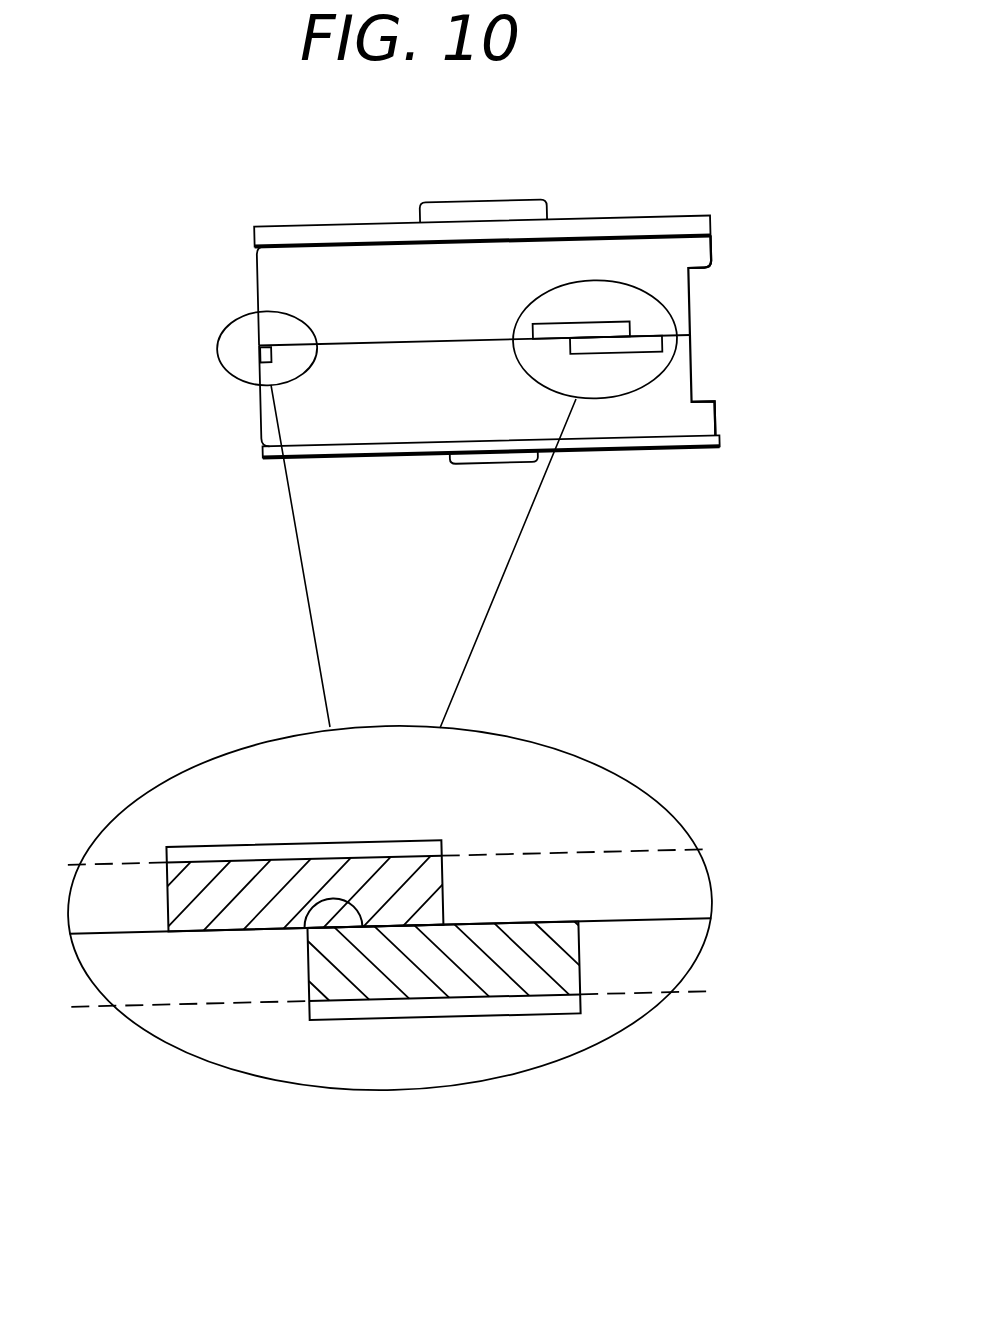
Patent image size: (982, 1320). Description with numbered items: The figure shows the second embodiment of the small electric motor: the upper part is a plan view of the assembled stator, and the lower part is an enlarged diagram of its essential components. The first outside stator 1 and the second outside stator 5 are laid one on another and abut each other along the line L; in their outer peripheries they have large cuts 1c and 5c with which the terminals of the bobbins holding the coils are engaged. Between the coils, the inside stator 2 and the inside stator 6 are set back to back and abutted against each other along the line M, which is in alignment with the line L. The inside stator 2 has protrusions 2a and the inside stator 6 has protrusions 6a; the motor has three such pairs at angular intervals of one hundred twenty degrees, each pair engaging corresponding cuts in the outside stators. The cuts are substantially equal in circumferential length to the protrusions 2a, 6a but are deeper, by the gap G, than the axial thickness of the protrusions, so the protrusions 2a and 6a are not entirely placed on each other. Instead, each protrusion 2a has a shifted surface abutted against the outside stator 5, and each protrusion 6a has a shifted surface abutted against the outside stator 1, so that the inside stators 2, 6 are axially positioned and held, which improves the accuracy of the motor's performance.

The outside stator 1 is at (557, 255).
The large cut 1c is at (705, 272).
The outside stator 5 is at (660, 415).
The large cut 5c is at (705, 397).
The protrusion 2a is at (413, 873).
The protrusion 6a is at (460, 980).
The inside stator 2 is at (667, 888).
The inside stator 6 is at (673, 955).
The gap G is at (225, 850).
The line L is at (667, 918).
The line M is at (310, 928).